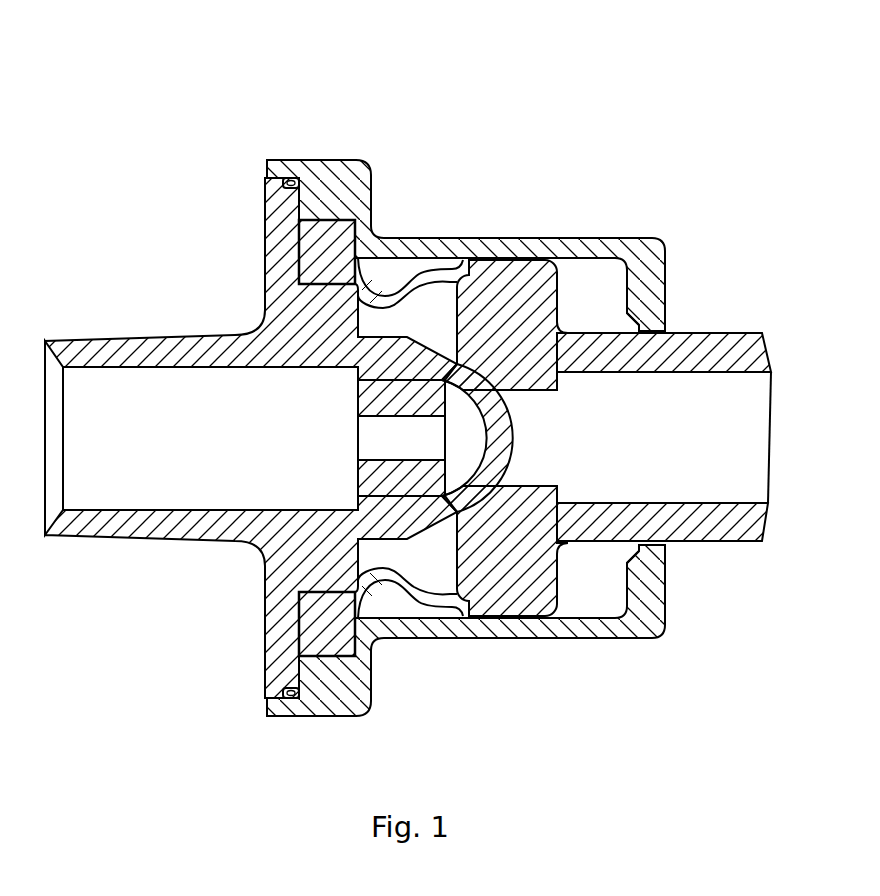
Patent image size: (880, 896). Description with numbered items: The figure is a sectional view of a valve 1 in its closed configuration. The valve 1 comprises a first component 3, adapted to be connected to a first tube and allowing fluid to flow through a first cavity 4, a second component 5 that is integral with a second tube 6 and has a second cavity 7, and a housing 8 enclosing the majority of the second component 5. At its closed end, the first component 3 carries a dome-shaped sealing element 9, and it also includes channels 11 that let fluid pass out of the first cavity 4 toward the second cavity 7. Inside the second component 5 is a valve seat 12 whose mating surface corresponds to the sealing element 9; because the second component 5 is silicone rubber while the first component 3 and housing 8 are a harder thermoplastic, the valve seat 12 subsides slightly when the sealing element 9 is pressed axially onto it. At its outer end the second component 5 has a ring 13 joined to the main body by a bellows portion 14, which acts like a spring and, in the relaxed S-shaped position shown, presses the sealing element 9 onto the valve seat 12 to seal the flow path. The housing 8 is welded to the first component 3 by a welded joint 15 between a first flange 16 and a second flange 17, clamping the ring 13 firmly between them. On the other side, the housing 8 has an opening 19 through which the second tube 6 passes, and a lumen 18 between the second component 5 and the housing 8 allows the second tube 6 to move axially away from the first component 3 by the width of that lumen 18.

The valve 1 is at (452, 118).
The first component 3 is at (297, 315).
The first cavity 4 is at (148, 407).
The second component 5 is at (523, 563).
The second tube 6 is at (693, 518).
The second cavity 7 is at (702, 447).
The housing 8 is at (560, 638).
The sealing element 9 is at (558, 337).
The channels 11 is at (402, 475).
The valve seat 12 is at (505, 362).
The ring 13 is at (337, 612).
The bellows portion 14 is at (400, 292).
The welded joint 15 is at (265, 173).
The first flange 16 is at (265, 197).
The second flange 17 is at (340, 176).
The lumen 18 is at (593, 292).
The opening 19 is at (670, 330).